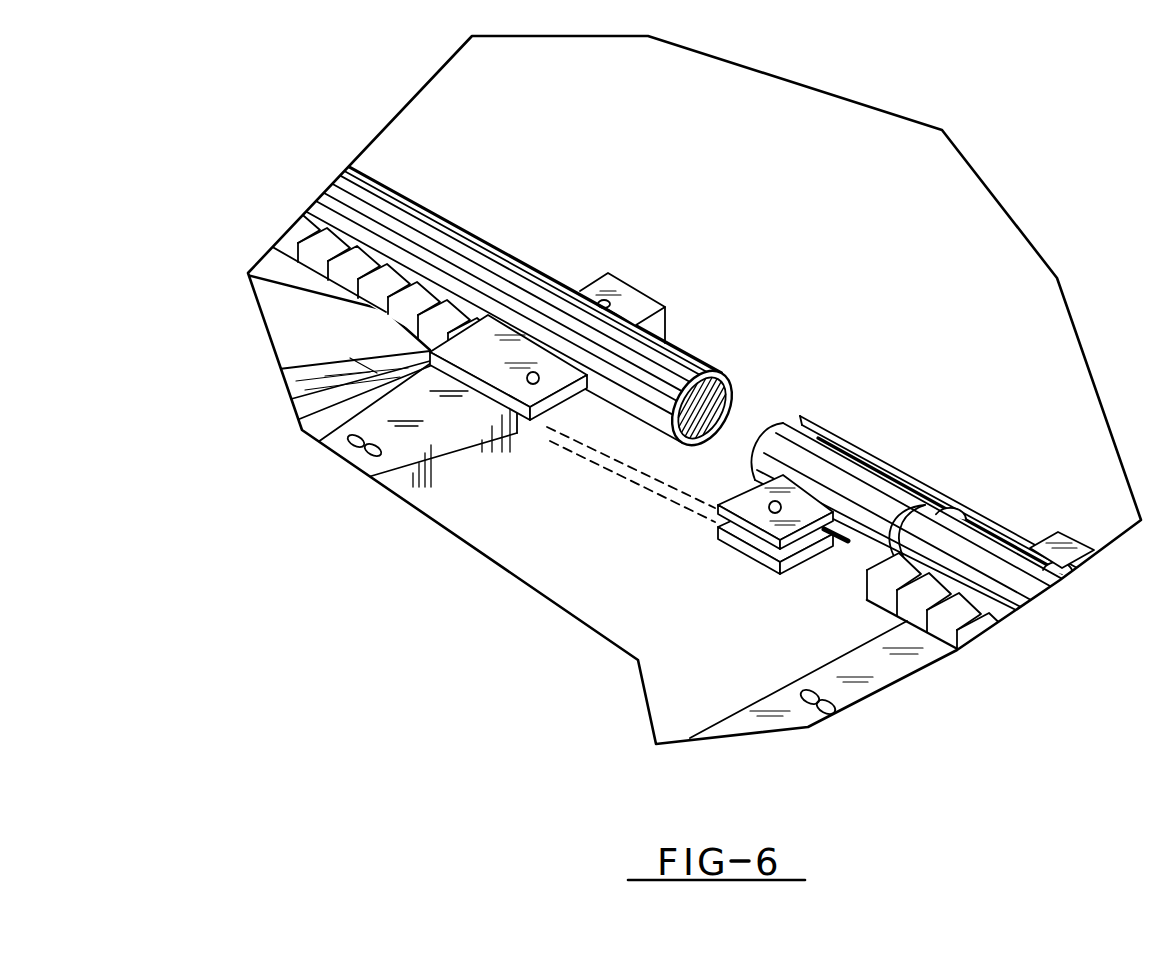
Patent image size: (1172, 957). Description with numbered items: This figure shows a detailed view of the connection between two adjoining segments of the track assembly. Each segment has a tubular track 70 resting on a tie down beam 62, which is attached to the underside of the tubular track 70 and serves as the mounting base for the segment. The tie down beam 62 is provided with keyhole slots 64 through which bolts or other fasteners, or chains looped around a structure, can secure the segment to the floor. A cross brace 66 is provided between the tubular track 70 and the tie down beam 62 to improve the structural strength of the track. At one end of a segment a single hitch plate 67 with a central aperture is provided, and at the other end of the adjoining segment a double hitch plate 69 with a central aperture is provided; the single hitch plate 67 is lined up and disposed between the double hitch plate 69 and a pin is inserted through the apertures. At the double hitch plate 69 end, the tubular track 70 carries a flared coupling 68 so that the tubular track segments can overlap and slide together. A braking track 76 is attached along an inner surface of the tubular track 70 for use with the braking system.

The tie down beam 62 is at (638, 306).
The keyhole slot 64 is at (800, 694).
The cross brace 66 is at (370, 365).
The single hitch plate 67 is at (513, 402).
The flared coupling 68 is at (870, 448).
The double hitch plate 69 is at (793, 560).
The tubular track 70 is at (522, 257).
The braking track 76 is at (384, 277).